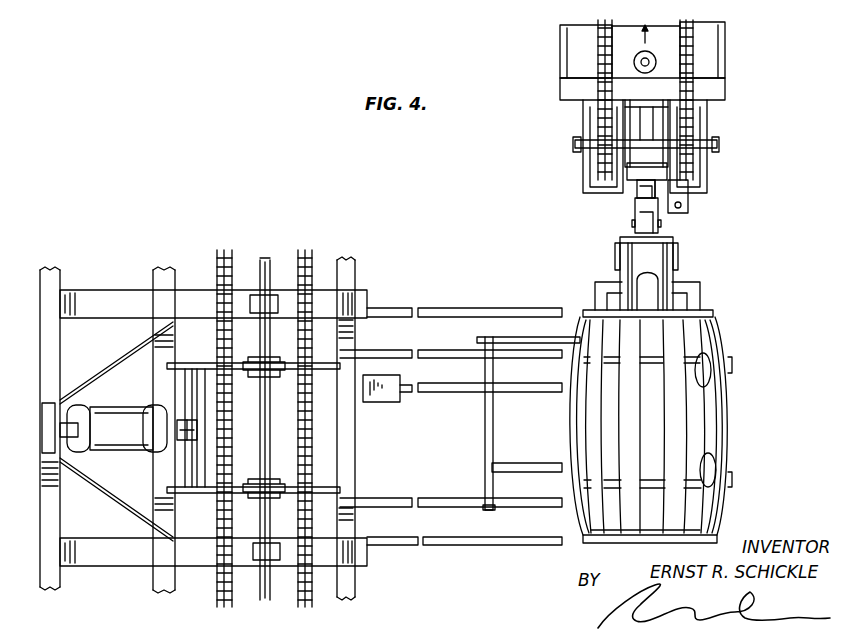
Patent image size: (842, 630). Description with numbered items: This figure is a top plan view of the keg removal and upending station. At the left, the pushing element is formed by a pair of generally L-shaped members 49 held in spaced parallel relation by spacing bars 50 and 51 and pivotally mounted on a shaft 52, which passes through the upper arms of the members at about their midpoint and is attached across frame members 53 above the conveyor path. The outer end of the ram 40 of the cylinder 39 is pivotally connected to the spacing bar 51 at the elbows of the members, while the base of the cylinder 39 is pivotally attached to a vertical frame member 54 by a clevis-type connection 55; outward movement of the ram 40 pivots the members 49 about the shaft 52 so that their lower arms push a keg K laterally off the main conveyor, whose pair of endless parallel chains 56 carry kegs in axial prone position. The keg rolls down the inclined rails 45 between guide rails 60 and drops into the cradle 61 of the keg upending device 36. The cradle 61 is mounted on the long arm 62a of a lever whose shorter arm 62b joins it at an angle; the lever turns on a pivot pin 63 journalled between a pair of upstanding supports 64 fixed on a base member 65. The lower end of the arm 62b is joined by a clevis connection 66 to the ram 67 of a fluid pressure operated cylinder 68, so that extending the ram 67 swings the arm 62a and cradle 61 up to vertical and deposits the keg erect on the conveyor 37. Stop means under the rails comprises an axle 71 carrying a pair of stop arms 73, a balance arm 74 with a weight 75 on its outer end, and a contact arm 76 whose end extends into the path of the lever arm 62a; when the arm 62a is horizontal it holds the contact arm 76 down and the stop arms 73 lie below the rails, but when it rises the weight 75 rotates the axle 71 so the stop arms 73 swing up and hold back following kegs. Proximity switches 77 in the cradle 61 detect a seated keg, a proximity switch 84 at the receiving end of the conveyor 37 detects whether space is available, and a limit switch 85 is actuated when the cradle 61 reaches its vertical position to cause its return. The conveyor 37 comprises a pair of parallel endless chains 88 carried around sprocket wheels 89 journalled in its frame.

The keg upending device 36 is at (738, 292).
The conveyor 37 is at (712, 104).
The cylinder 39 is at (113, 428).
The ram 40 is at (193, 460).
The inclined rails 45 is at (448, 352).
The generally L-shaped members 49 is at (210, 370).
The spacing bar 50 is at (348, 478).
The spacing bar 51 is at (193, 480).
The shaft 52 is at (268, 356).
The frame members 53 is at (205, 300).
The vertical frame member 54 is at (50, 380).
The clevis-type connection 55 is at (78, 410).
The endless parallel chains 56 is at (302, 252).
The guide rails 60 is at (438, 312).
The cradle 61 is at (728, 356).
The long arm 62a is at (640, 310).
The shorter arm 62b is at (622, 239).
The pivot pin 63 is at (670, 245).
The upstanding supports 64 is at (625, 276).
The base member 65 is at (598, 302).
The clevis connection 66 is at (660, 224).
The ram 67 is at (642, 192).
The fluid pressure operated cylinder 68 is at (637, 186).
The axle 71 is at (485, 453).
The stop arms 73 is at (535, 464).
The balance arm 74 is at (463, 392).
The weight 75 is at (382, 402).
The contact arm 76 is at (515, 338).
The proximity switches 77 is at (703, 372).
The proximity switch 84 is at (640, 52).
The limit switch 85 is at (688, 208).
The endless chains 88 is at (684, 22).
The sprocket wheels 89 is at (598, 164).
The keg K is at (722, 329).